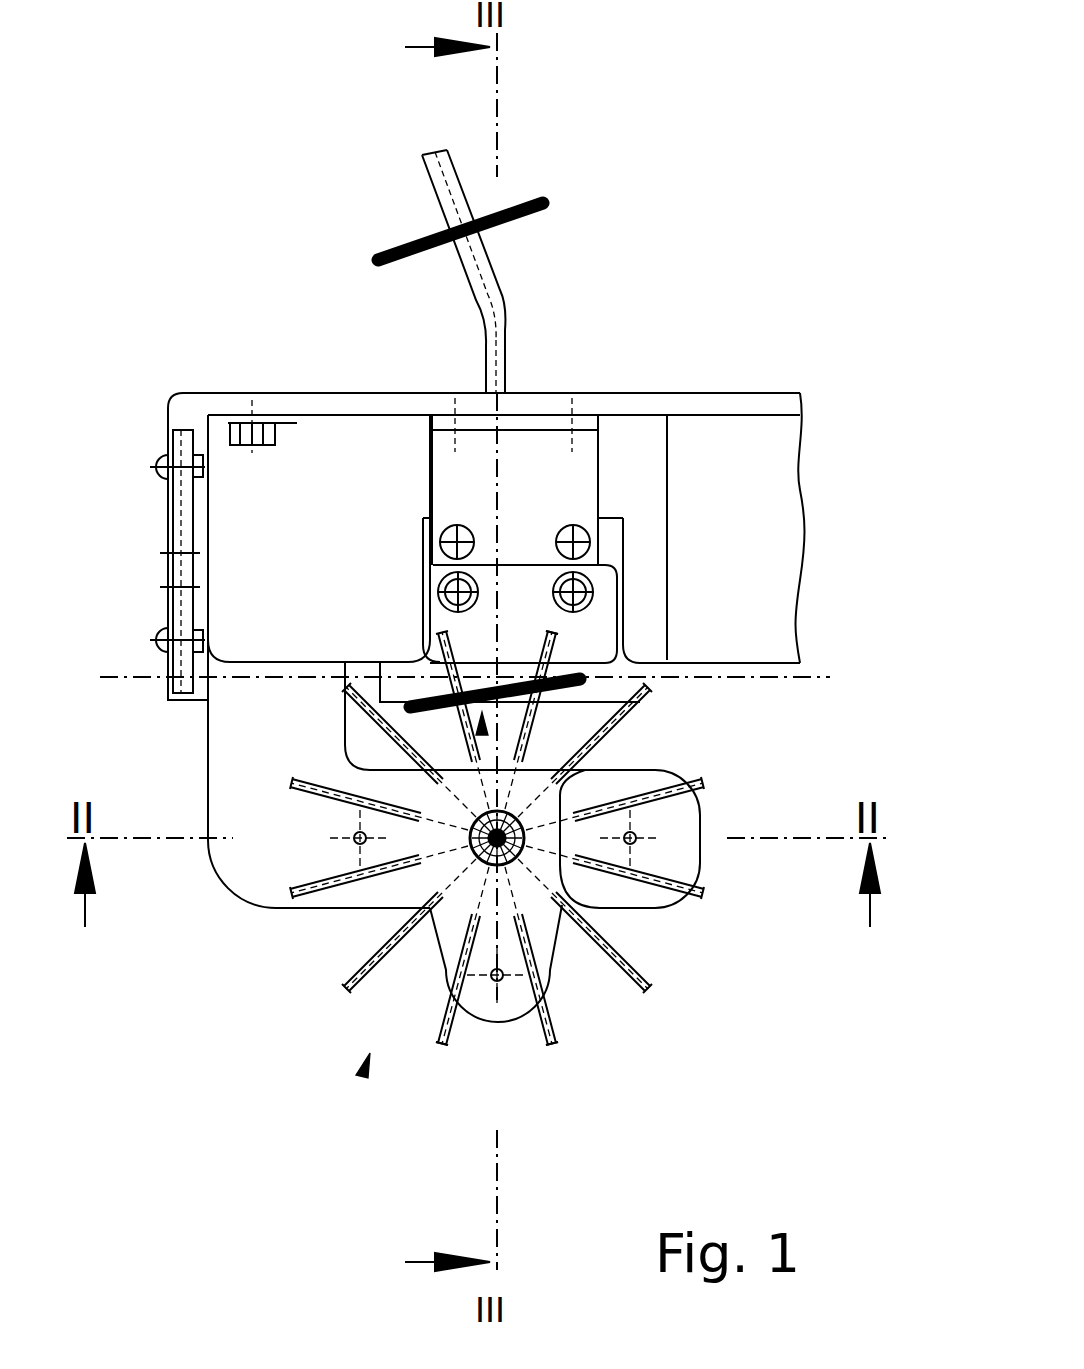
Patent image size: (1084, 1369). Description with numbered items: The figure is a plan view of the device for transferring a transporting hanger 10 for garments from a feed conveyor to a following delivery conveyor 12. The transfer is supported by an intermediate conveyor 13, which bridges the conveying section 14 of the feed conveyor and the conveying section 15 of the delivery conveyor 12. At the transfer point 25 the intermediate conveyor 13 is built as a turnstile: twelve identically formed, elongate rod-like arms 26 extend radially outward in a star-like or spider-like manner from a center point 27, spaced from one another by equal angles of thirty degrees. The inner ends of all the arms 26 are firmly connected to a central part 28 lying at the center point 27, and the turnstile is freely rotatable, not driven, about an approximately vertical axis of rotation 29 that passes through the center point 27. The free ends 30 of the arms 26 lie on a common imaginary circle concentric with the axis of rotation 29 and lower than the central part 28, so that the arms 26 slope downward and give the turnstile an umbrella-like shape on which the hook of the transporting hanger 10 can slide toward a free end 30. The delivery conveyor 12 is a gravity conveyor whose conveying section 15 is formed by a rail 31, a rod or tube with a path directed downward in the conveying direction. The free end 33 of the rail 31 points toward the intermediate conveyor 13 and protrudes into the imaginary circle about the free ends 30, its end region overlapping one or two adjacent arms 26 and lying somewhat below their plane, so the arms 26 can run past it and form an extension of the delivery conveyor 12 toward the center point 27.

The transporting hanger 10 is at (513, 200).
The delivery conveyor 12 is at (500, 352).
The intermediate conveyor 13 is at (364, 1068).
The conveying section 14 is at (806, 675).
The conveying section 15 is at (495, 478).
The transfer point 25 is at (294, 907).
The arm 26 is at (577, 745).
The center point 27 is at (468, 880).
The central part 28 is at (465, 893).
The axis of rotation 29 is at (497, 838).
The free end 30 is at (545, 637).
The rail 31 is at (490, 294).
The free end 33 is at (450, 862).